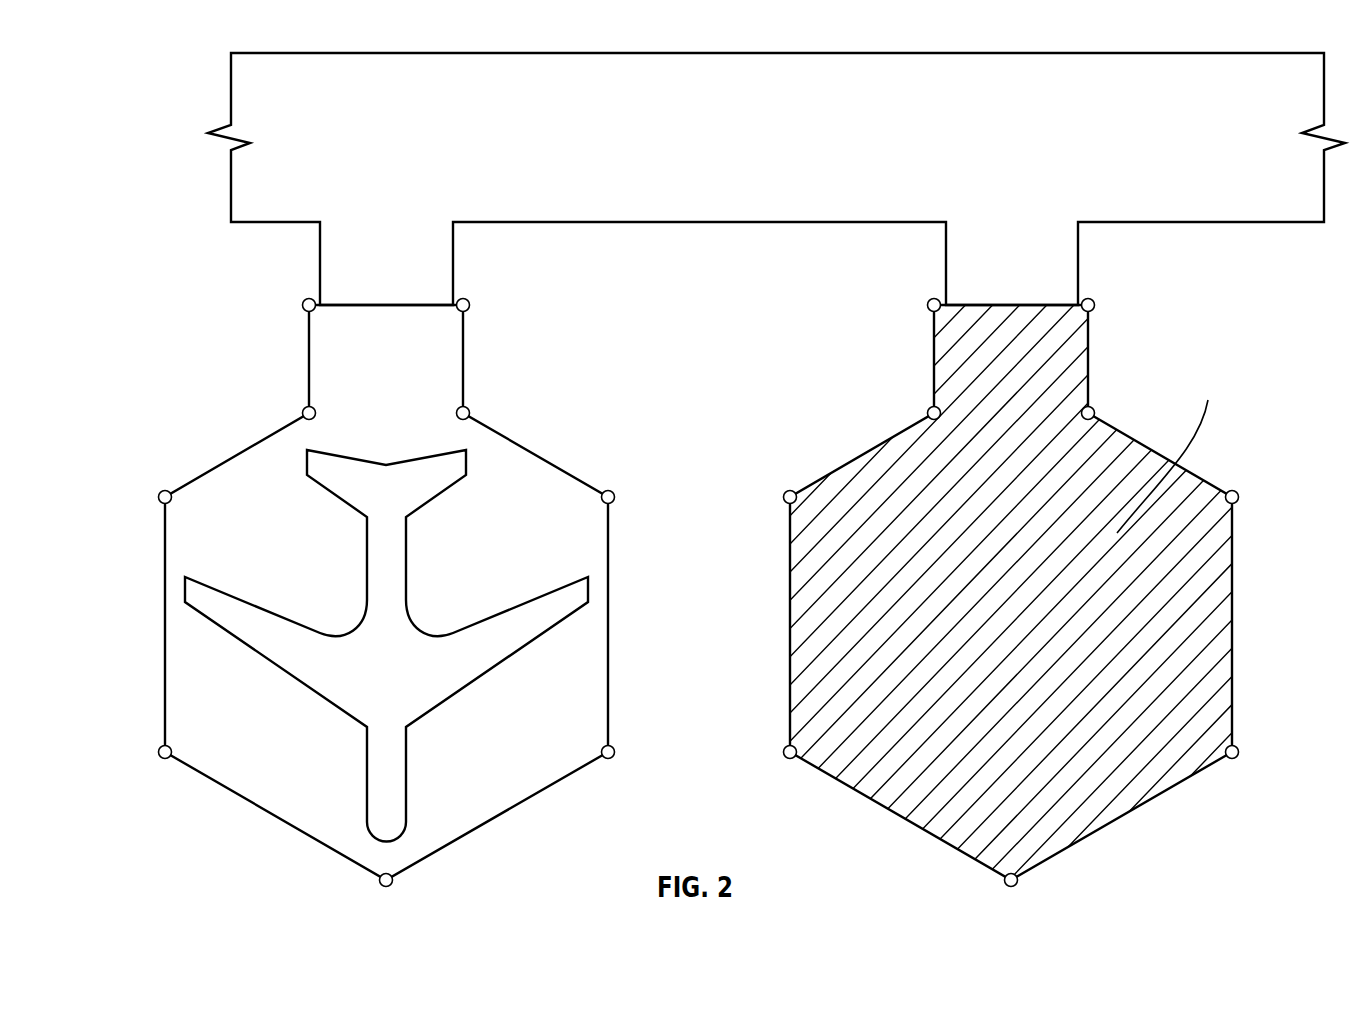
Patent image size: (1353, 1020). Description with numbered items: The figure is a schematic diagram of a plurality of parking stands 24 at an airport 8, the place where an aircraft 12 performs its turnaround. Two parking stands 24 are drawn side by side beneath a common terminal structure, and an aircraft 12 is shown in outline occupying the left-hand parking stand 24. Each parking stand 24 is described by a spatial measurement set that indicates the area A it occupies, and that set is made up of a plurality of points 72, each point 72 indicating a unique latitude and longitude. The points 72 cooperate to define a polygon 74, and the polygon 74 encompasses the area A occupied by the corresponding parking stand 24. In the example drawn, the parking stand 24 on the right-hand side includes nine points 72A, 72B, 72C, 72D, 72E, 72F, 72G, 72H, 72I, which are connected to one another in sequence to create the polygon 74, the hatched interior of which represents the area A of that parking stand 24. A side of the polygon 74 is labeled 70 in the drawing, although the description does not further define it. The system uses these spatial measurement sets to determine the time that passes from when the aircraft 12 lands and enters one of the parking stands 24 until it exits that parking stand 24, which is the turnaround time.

The airport 8 is at (1240, 840).
The aircraft 12 is at (406, 550).
The parking stand 24 is at (712, 48).
The side of polygon 70 is at (1233, 478).
The points 72 is at (468, 300).
The point 72A is at (1092, 300).
The point 72B is at (1092, 408).
The point 72C is at (1237, 491).
The point 72D is at (1237, 747).
The point 72E is at (1017, 885).
The point 72F is at (785, 757).
The point 72G is at (786, 491).
The point 72H is at (930, 407).
The point 72I is at (930, 299).
The polygon 74 is at (492, 820).